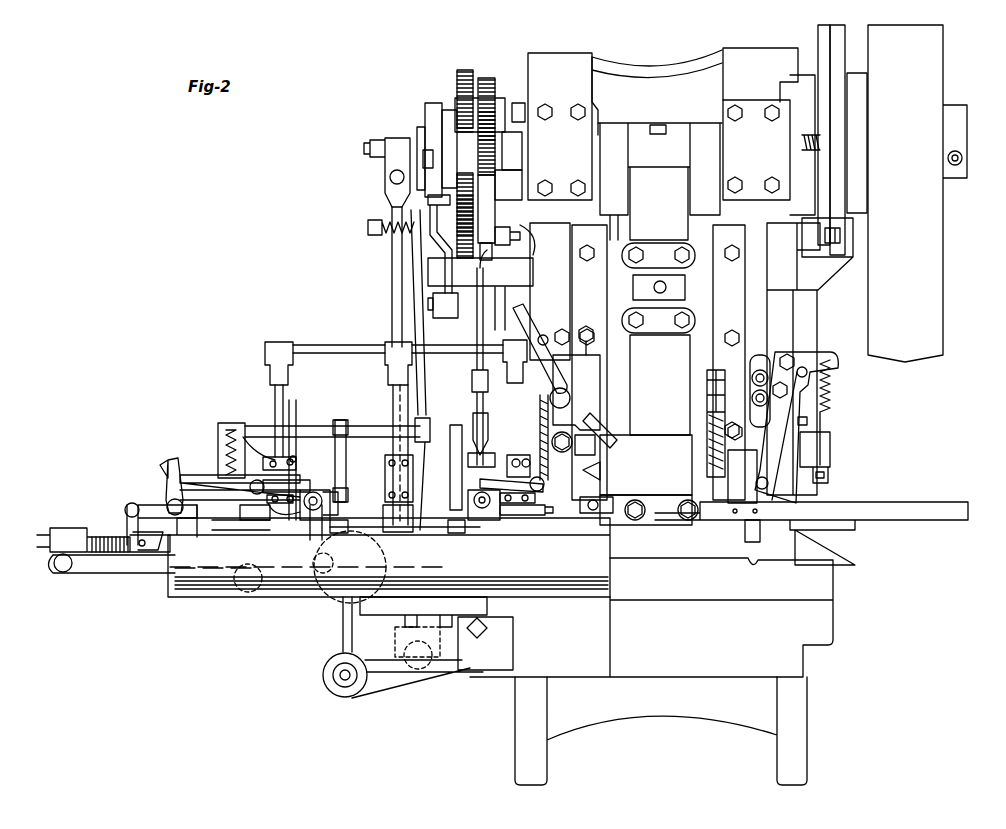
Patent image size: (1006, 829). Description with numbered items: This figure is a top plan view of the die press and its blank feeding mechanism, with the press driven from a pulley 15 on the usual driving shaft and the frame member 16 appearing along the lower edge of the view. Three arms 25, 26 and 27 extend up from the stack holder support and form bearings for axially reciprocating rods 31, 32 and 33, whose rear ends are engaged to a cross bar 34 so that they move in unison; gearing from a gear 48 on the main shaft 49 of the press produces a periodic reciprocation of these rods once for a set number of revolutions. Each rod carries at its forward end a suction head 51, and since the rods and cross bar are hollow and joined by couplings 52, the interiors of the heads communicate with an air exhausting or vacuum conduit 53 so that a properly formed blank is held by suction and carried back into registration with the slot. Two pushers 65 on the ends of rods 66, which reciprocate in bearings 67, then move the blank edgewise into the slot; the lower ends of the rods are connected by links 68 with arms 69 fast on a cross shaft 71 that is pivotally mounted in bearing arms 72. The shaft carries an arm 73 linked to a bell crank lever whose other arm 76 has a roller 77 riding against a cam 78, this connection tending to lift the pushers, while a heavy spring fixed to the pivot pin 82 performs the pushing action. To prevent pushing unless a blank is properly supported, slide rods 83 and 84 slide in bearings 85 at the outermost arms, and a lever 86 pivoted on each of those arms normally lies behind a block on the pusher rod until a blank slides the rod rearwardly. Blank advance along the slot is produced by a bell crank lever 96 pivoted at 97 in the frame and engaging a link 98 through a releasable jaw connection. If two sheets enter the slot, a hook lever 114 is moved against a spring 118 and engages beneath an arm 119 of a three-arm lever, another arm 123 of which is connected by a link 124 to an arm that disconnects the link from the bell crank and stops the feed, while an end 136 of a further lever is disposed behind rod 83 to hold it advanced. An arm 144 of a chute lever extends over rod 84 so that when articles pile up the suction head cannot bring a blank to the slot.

The pulley 15 is at (928, 232).
The bed 16 is at (605, 575).
The arm 25 is at (288, 458).
The arm 26 is at (385, 473).
The arm 27 is at (536, 498).
The rod 31 is at (275, 395).
The rod 32 is at (393, 398).
The rod 33 is at (475, 398).
The cross bar 34 is at (328, 353).
The gear 48 is at (500, 130).
The main shaft 49 is at (503, 148).
The suction head 51 is at (397, 520).
The coupling 52 is at (282, 345).
The vacuum conduit 53 is at (523, 313).
The pusher 65 is at (343, 545).
The rod 66 is at (318, 535).
The bearing 67 is at (480, 494).
The link 68 is at (332, 504).
The arm 69 is at (348, 460).
The cross shaft 71 is at (265, 428).
The bearing arm 72 is at (220, 430).
The arm 73 is at (478, 440).
The bell crank lever arm 76 is at (500, 253).
The roller 77 is at (527, 346).
The cam 78 is at (485, 187).
The pivot pin 82 is at (468, 462).
The slide rod 83 is at (285, 540).
The slide rod 84 is at (510, 546).
The bearing 85 is at (298, 466).
The lever 86 is at (298, 484).
The bell crank lever 96 is at (385, 685).
The pivot 97 is at (322, 679).
The link 98 is at (125, 572).
The hook lever 114 is at (208, 462).
The spring 118 is at (228, 448).
The arm 119 is at (168, 462).
The arm 123 is at (160, 507).
The link 124 is at (127, 517).
The lever end 136 is at (294, 458).
The lever arm 144 is at (583, 470).